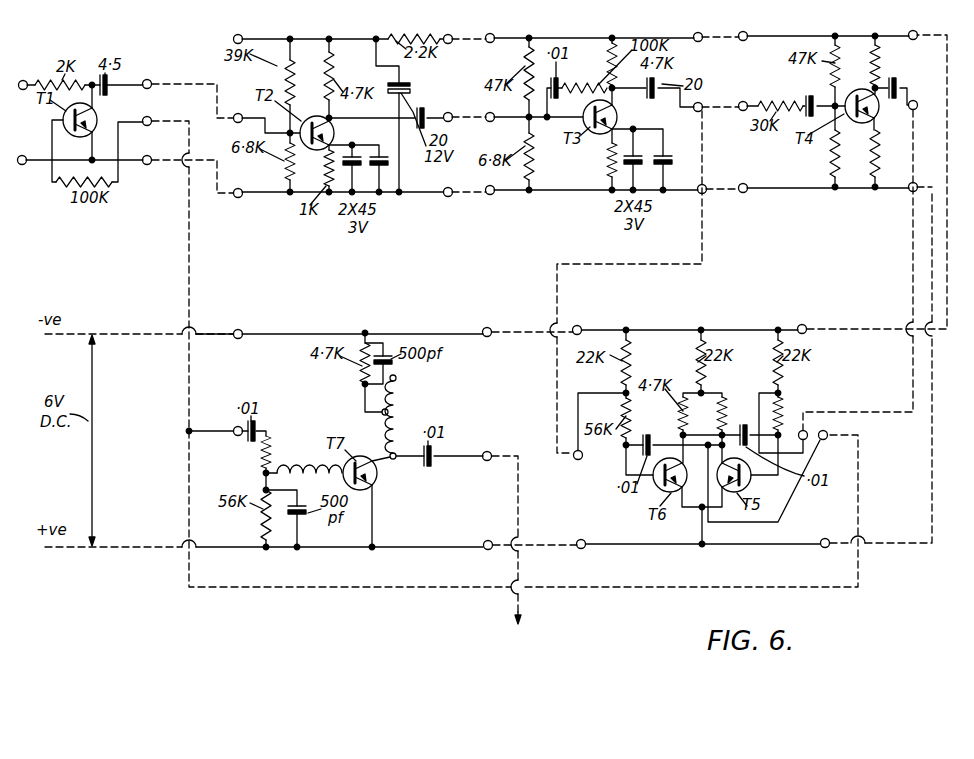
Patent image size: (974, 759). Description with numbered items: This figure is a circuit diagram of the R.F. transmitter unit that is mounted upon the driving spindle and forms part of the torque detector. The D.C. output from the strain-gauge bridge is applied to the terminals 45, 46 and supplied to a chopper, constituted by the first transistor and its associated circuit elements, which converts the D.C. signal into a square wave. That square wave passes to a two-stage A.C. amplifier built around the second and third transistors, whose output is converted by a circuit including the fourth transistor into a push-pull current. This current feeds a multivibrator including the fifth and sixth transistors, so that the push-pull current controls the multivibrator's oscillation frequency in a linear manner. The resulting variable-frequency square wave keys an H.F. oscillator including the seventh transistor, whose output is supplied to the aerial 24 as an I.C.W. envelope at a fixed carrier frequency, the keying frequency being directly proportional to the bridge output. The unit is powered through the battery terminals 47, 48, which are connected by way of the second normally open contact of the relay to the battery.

The terminal 45 is at (22, 80).
The terminal 46 is at (24, 165).
The battery terminal 47 is at (238, 198).
The battery terminal 48 is at (239, 329).
The aerial 24 is at (515, 613).